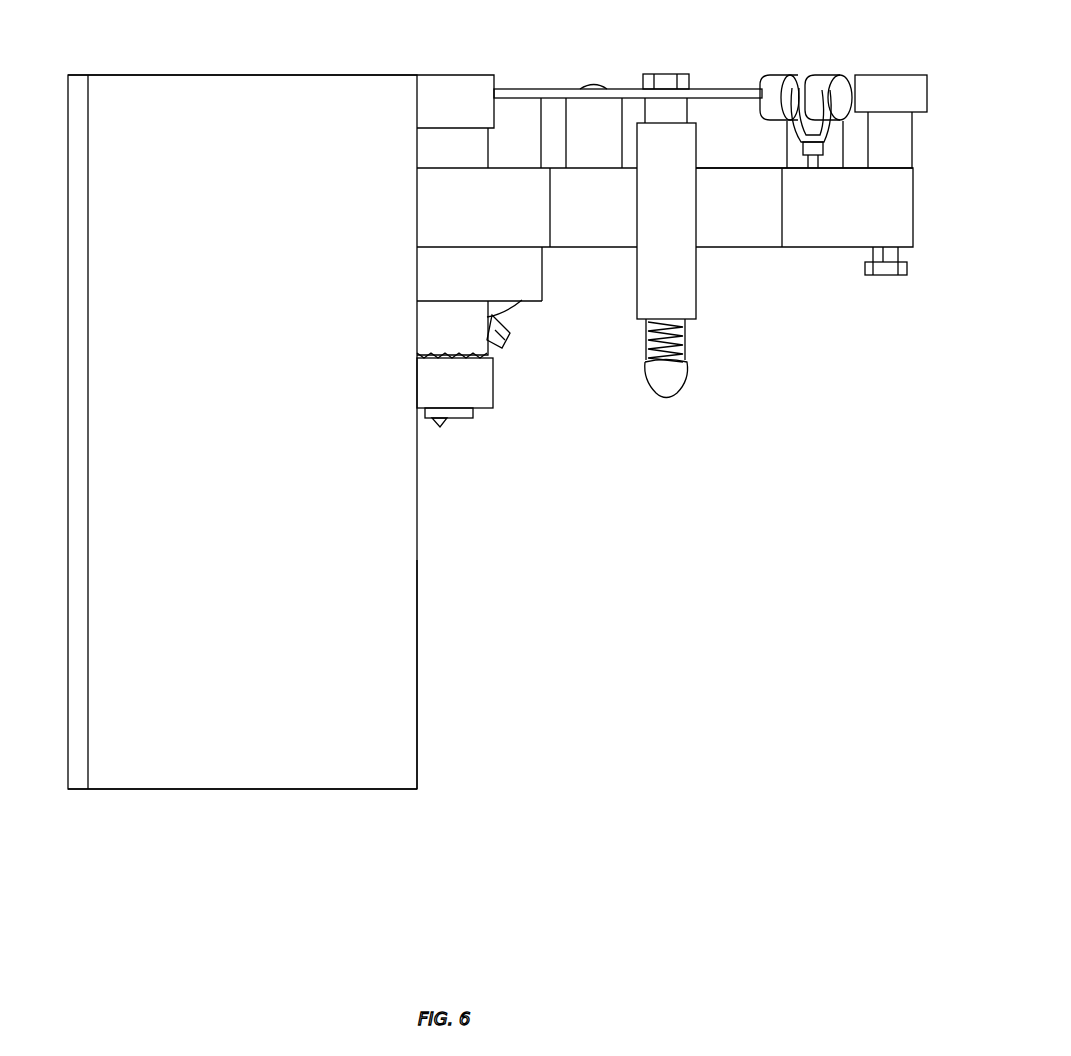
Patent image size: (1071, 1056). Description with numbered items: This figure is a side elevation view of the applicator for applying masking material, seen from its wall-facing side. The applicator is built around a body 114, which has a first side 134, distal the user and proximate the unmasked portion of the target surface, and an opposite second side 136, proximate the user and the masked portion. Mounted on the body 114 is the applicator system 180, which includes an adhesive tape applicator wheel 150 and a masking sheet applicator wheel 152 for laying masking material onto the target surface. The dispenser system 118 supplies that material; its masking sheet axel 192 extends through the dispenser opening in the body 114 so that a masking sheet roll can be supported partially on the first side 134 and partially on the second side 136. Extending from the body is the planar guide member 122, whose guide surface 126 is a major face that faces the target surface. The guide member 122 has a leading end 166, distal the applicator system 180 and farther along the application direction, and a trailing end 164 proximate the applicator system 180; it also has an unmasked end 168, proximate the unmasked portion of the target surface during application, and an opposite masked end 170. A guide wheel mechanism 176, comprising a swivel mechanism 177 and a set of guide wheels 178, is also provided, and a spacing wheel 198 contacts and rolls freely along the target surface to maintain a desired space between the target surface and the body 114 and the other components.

The body 114 is at (905, 205).
The dispenser system 118 is at (653, 283).
The guide member 122 is at (375, 645).
The guide surface 126 is at (397, 591).
The first side 134 is at (855, 166).
The second side 136 is at (797, 247).
The adhesive tape applicator wheel 150 is at (478, 93).
The masking sheet applicator wheel 152 is at (472, 395).
The trailing end 164 is at (67, 378).
The leading end 166 is at (418, 758).
The unmasked end 168 is at (220, 75).
The masked end 170 is at (325, 790).
The guide wheel mechanism 176 is at (833, 62).
The swivel mechanism 177 is at (813, 149).
The set of guide wheels 178 is at (773, 82).
The applicator system 180 is at (665, 231).
The masking sheet axel 192 is at (682, 385).
The spacing wheel 198 is at (891, 86).